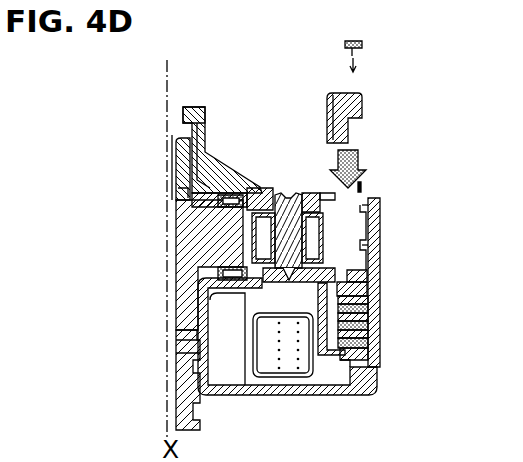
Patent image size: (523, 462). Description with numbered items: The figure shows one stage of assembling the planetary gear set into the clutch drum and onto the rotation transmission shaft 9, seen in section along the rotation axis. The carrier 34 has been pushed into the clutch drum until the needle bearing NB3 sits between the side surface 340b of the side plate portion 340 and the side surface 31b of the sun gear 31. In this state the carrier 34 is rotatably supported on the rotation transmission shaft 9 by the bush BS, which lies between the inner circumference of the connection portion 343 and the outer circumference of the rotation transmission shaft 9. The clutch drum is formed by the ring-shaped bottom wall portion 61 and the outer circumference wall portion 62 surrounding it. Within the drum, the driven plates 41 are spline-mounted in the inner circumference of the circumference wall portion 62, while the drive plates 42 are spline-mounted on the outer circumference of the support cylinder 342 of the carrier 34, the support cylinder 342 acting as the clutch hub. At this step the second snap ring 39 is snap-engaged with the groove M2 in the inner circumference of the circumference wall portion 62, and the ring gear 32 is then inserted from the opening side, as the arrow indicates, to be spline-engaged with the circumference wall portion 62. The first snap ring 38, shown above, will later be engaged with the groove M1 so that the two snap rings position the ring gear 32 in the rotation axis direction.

The rotation transmission shaft 9 is at (168, 363).
The sun gear 31 is at (175, 271).
The side surface 31b is at (200, 213).
The ring gear 32 is at (365, 104).
The carrier 34 is at (193, 107).
The first snap ring 38 is at (365, 46).
The second snap ring 39 is at (363, 187).
The driven plates 41 is at (368, 352).
The drive plates 42 is at (370, 334).
The bottom wall portion 61 is at (318, 395).
The circumference wall portion 62 is at (380, 291).
The side plate portion 340 is at (256, 190).
The side surface 340b is at (178, 181).
The support cylinder 342 is at (321, 298).
The connection portion 343 is at (205, 145).
The bush BS is at (173, 134).
The needle bearing NB3 is at (226, 196).
The groove M1 is at (370, 213).
The groove M2 is at (370, 248).